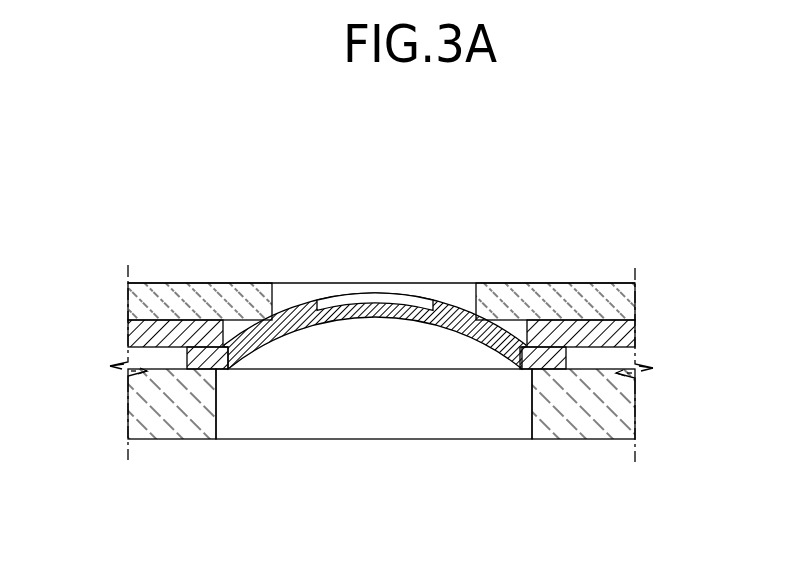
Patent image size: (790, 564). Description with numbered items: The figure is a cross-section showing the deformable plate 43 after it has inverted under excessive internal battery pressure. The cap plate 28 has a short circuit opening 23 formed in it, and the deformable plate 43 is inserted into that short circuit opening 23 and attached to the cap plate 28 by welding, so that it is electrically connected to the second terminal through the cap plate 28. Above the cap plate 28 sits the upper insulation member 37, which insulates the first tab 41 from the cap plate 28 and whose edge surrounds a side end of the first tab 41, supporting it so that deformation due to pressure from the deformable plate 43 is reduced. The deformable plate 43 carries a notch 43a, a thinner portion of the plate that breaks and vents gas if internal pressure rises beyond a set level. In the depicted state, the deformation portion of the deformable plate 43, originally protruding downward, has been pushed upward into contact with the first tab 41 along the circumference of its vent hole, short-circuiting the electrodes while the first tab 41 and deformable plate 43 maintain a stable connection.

The first tab 41 is at (206, 294).
The upper insulation member 37 is at (134, 337).
The deformable plate 43 is at (452, 304).
The notch 43a is at (353, 300).
The cap plate 28 is at (192, 422).
The short circuit opening 23 is at (438, 416).